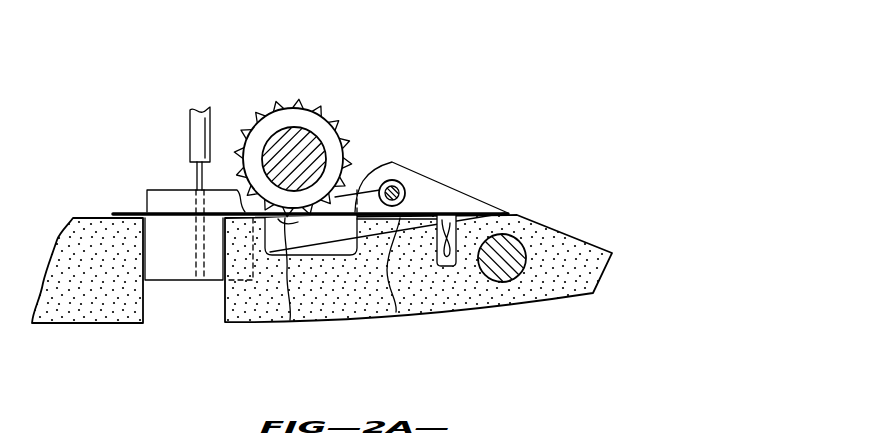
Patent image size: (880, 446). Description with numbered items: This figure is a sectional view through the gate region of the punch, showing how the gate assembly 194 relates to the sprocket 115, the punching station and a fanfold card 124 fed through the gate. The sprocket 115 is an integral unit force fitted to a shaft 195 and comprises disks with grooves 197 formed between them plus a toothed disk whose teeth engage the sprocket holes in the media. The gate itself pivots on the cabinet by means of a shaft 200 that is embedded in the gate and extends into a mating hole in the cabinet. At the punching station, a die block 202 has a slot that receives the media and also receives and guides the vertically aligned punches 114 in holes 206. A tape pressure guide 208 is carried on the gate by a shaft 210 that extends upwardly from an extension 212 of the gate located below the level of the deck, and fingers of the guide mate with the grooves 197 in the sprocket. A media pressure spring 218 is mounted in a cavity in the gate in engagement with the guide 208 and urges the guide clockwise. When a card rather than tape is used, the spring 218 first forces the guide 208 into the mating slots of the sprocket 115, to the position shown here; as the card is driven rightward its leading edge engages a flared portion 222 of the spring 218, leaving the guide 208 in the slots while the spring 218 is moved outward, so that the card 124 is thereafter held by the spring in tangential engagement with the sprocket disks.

The gate assembly 194 is at (583, 135).
The punches 114 is at (190, 125).
The sprocket 115 is at (325, 100).
The fanfold cards 124 is at (115, 211).
The shaft 195 is at (320, 157).
The grooves 197 is at (262, 126).
The shaft 200 is at (520, 274).
The die block 202 is at (147, 263).
The holes 206 is at (203, 280).
The tape pressure guide 208 is at (397, 177).
The shaft 210 is at (387, 181).
The extension 212 is at (440, 183).
The media pressure spring 218 is at (396, 312).
The flared portion 222 is at (290, 320).